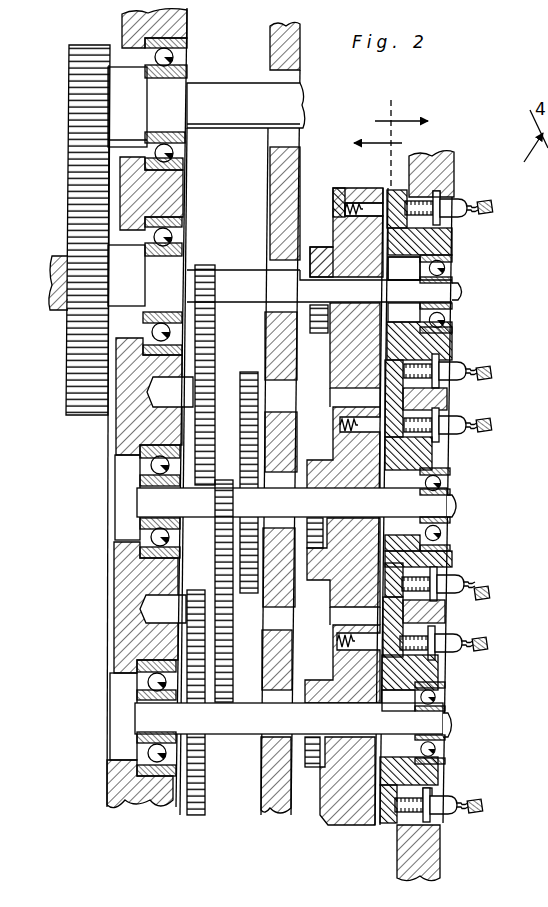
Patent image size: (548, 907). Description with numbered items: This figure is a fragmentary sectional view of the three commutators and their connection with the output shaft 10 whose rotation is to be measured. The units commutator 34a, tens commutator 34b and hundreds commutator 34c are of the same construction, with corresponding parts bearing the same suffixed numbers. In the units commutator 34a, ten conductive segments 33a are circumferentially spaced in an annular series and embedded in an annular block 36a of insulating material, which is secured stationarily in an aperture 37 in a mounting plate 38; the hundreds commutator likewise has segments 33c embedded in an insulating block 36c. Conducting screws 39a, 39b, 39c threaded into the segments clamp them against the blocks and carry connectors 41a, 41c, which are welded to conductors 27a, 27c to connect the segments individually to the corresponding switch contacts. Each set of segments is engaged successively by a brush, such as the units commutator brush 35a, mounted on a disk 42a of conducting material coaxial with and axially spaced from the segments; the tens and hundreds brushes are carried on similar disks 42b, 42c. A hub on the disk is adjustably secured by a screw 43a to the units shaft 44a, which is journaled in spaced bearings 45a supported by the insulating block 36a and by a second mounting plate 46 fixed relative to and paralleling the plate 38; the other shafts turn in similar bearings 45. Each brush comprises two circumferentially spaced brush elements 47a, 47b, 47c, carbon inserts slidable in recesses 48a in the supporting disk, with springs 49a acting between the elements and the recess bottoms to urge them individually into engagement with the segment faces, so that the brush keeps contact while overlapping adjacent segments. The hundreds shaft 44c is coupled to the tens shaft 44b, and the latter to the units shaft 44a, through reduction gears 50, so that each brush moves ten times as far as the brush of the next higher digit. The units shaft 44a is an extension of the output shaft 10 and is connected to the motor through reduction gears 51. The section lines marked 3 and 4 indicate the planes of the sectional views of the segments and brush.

The reduction gears 51 is at (82, 44).
The output shaft 10 is at (56, 258).
The second mounting plate 46 is at (118, 581).
The bearings 45a is at (176, 238).
The bearings 45 is at (448, 533).
The units shaft 44a is at (262, 278).
The tens shaft 44b is at (197, 514).
The hundreds shaft 44c is at (137, 717).
The reduction gears 50 is at (215, 755).
The disk 42a is at (348, 371).
The disk 42b is at (345, 447).
The disk 42c is at (345, 815).
The screw 43a is at (318, 334).
The units commutator brush 35a is at (360, 222).
The brush elements 47a is at (368, 201).
The brush elements 47b is at (364, 416).
The brush elements 47c is at (359, 632).
The recesses 48a is at (343, 201).
The springs 49a is at (344, 208).
The mounting plate 38 is at (443, 163).
The segments 33a is at (390, 191).
The segments 33c is at (380, 820).
The annular block 36a is at (452, 341).
The annular block 36c is at (443, 766).
The aperture 37 is at (447, 200).
The conducting screws 39a is at (449, 228).
The conducting screws 39b is at (445, 578).
The conducting screws 39c is at (445, 637).
The connectors 41a is at (466, 207).
The connectors 41c is at (452, 654).
The conductors 27a is at (478, 213).
The conductors 27c is at (465, 813).
The units commutator 34a is at (494, 312).
The tens commutator 34b is at (467, 488).
The hundreds commutator 34c is at (474, 741).
The section line 3- 3 is at (399, 306).
The section line 4- 4 is at (371, 330).